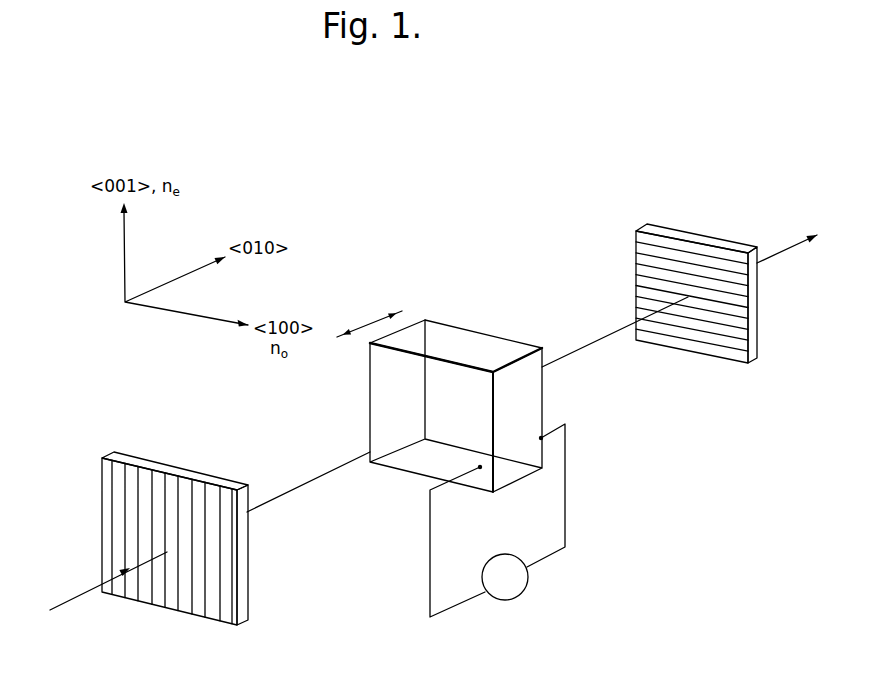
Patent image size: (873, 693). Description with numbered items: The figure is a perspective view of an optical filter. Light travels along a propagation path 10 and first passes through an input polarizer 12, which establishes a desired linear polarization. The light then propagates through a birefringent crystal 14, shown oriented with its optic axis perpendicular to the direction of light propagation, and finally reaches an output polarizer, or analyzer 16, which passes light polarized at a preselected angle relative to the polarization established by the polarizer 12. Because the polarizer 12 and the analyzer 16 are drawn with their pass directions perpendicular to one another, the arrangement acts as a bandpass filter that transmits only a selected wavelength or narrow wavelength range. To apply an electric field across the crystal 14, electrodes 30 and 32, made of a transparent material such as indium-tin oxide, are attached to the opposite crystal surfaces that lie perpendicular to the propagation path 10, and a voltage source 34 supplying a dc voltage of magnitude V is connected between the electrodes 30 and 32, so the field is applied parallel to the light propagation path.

The light propagation path 10 is at (90, 592).
The input polarizer 12 is at (243, 622).
The birefringent crystal 14 is at (470, 324).
The analyzer 16 is at (642, 250).
The electrode 30 is at (382, 403).
The electrode 32 is at (542, 408).
The voltage source 34 is at (515, 600).